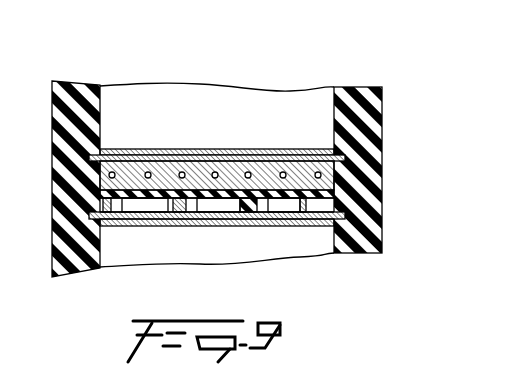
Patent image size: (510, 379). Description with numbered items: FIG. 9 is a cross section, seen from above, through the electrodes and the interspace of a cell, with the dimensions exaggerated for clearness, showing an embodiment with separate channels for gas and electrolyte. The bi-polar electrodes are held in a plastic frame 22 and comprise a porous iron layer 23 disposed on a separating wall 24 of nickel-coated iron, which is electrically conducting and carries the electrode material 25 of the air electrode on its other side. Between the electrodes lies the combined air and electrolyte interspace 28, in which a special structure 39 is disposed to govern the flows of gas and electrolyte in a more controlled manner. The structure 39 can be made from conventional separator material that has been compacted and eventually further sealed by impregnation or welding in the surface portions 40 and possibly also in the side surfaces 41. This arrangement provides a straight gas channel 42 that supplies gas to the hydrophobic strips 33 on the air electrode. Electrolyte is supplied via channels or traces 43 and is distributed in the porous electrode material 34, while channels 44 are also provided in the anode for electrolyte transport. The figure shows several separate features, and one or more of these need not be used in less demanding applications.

The plastic frame 22 is at (370, 202).
The porous iron layer 23 is at (268, 165).
The separating wall 24 is at (382, 145).
The electrode material 25 is at (305, 158).
The interspace 28 is at (378, 170).
The hydrophobic strips 33 is at (138, 212).
The porous electrode material 34 is at (182, 212).
The structure 39 is at (98, 202).
The surface portions 40 is at (300, 204).
The side surfaces 41 is at (275, 200).
The gas channel 42 is at (217, 202).
The channels or traces 43 is at (98, 220).
The channels 44 is at (150, 174).